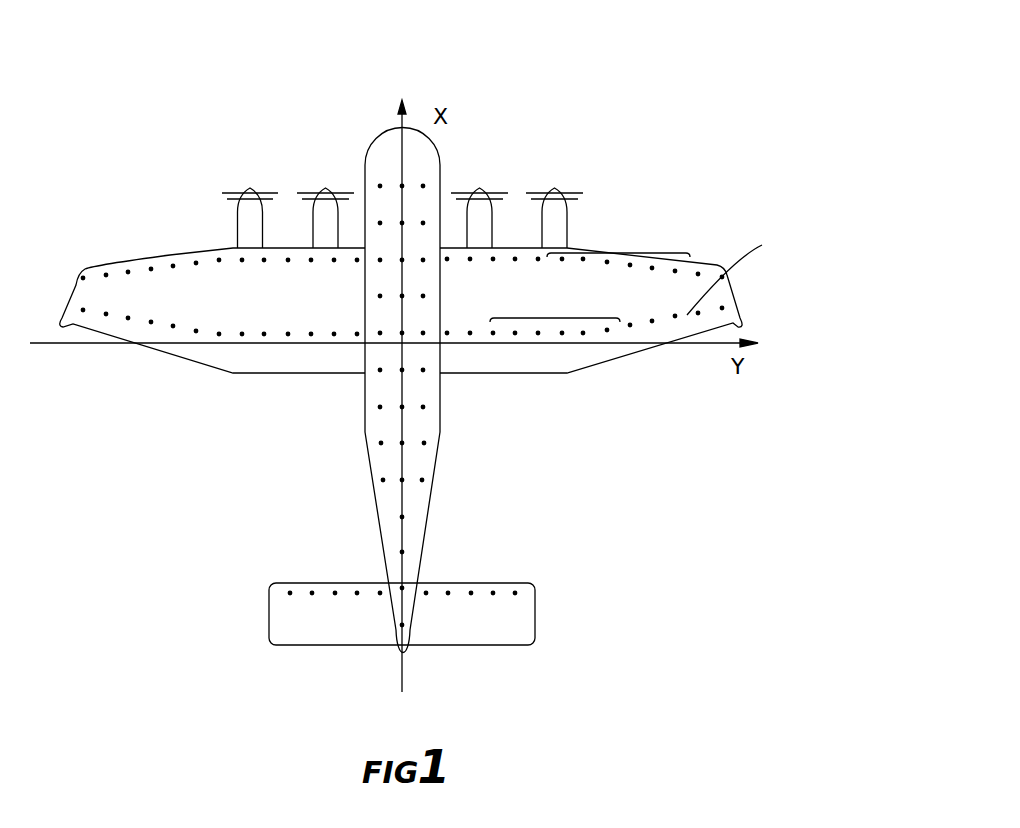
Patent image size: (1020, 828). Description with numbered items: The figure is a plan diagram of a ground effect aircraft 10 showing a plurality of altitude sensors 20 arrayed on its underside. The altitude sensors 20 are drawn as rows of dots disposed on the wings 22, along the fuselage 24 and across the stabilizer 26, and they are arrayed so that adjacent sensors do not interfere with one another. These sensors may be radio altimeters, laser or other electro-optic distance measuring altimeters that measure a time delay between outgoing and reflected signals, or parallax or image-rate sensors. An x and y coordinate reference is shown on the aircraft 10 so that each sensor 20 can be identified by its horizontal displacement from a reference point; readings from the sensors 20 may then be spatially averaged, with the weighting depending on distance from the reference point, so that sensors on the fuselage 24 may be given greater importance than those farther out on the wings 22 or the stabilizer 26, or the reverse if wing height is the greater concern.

The aircraft 10 is at (628, 62).
The altitude sensors 20 is at (617, 250).
The wings 22 is at (265, 367).
The fuselage 24 is at (430, 455).
The stabilizer 26 is at (463, 637).